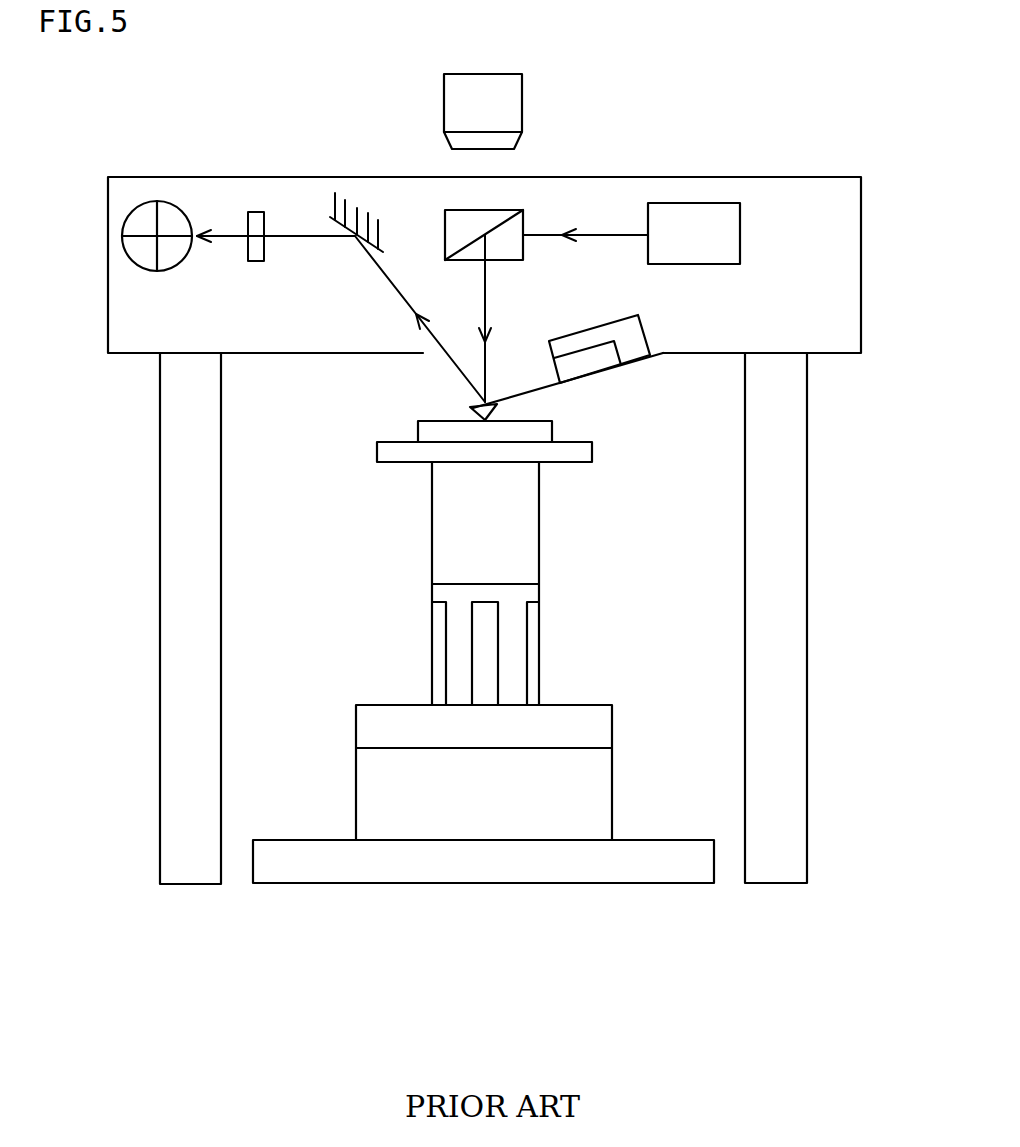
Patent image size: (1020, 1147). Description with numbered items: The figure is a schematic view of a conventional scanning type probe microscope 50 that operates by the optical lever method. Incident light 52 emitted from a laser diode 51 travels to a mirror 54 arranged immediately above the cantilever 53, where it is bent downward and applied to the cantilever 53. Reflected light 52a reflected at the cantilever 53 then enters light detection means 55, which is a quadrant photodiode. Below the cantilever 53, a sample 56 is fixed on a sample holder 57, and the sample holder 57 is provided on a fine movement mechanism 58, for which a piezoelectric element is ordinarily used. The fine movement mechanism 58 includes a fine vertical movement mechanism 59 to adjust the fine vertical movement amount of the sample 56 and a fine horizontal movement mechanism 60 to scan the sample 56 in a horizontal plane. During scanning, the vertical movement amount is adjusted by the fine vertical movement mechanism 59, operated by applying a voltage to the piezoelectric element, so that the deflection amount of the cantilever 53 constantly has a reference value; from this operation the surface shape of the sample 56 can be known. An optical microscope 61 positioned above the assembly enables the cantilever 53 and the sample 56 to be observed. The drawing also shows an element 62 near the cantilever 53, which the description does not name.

The scanning type probe microscope 50 is at (517, 1023).
The laser diode 51 is at (740, 232).
The incident light 52 is at (626, 235).
The reflected light 52a is at (396, 288).
The cantilever 53 is at (522, 395).
The mirror 54 is at (525, 223).
The light detection means 55 is at (150, 200).
The sample 56 is at (418, 432).
The sample holder 57 is at (582, 452).
The fine movement mechanism 58 is at (548, 583).
The fine vertical movement mechanism 59 is at (525, 552).
The fine horizontal movement mechanism 60 is at (539, 660).
The optical microscope 61 is at (522, 113).
The displacement sensor 62 is at (650, 333).